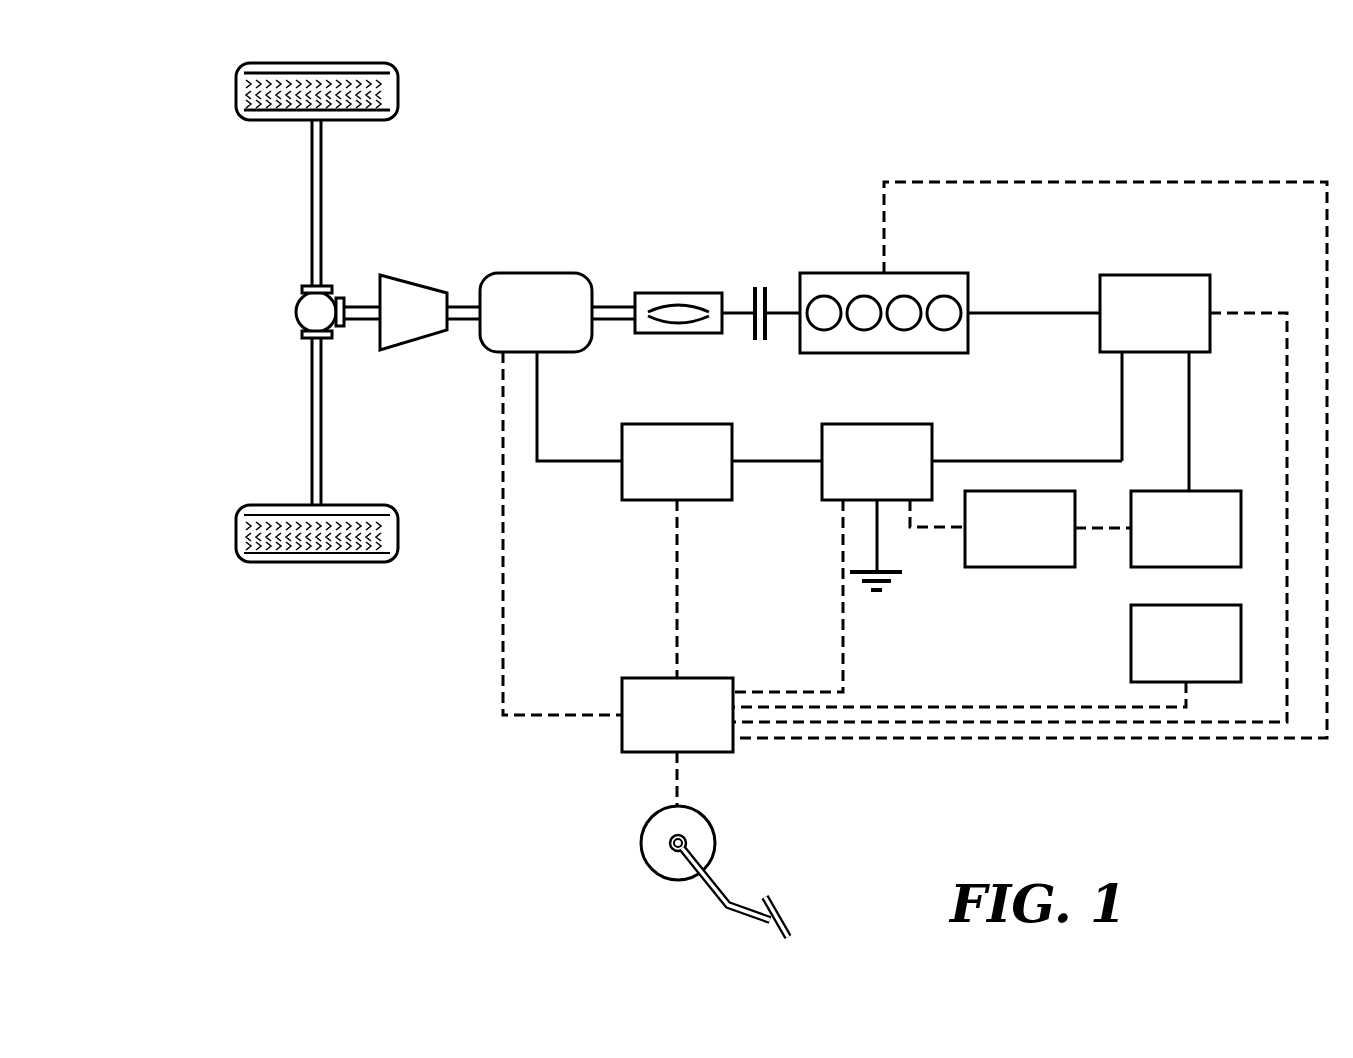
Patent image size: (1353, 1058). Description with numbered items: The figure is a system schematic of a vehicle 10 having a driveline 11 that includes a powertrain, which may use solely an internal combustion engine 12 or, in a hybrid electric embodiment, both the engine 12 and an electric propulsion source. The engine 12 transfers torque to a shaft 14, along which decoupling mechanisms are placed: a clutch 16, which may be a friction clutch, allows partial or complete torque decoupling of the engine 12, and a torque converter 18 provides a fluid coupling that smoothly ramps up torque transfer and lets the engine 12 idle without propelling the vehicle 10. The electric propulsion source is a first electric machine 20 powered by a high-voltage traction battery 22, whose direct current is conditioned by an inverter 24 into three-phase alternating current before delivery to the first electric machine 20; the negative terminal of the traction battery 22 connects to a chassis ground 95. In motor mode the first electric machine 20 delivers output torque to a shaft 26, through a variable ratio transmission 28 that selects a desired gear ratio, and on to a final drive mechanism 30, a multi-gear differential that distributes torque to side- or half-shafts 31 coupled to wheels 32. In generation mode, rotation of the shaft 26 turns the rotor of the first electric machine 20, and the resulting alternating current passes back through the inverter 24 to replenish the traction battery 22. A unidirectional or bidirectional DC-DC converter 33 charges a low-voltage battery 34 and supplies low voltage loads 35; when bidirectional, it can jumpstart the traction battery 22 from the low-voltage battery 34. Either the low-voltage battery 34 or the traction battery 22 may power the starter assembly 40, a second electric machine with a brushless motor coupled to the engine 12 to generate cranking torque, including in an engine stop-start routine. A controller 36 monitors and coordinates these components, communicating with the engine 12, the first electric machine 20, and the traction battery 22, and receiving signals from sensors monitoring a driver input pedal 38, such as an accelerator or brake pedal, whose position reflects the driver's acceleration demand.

The vehicle 10 is at (163, 192).
The driveline 11 is at (618, 262).
The internal combustion engine 12 is at (855, 273).
The shaft 14 is at (775, 287).
The clutch 16 is at (752, 335).
The torque converter 18 is at (680, 293).
The first electric machine 20 is at (535, 273).
The high-voltage traction battery 22 is at (872, 424).
The inverter 24 is at (670, 424).
The shaft 26 is at (464, 300).
The variable ratio transmission 28 is at (415, 275).
The final drive mechanism 30 is at (296, 313).
The half-shafts 31 is at (311, 208).
The wheels 32 is at (236, 92).
The DC-DC converter 33 is at (1018, 567).
The low-voltage battery 34 is at (1212, 491).
The low voltage loads 35 is at (1131, 643).
The controller 36 is at (643, 678).
The driver input pedal 38 is at (712, 893).
The starter assembly 40 is at (1152, 275).
The chassis ground 95 is at (880, 542).